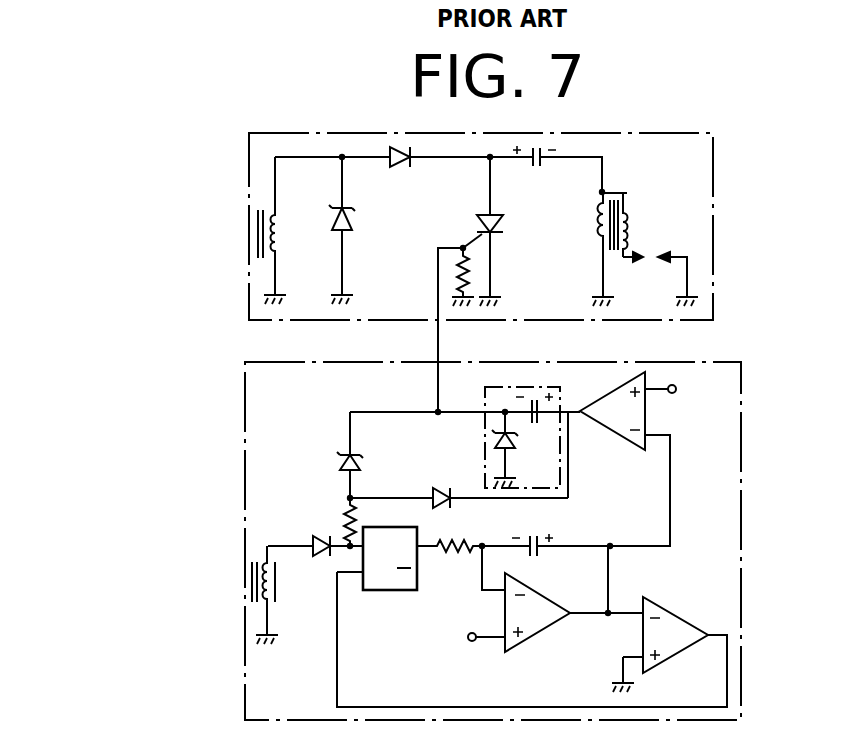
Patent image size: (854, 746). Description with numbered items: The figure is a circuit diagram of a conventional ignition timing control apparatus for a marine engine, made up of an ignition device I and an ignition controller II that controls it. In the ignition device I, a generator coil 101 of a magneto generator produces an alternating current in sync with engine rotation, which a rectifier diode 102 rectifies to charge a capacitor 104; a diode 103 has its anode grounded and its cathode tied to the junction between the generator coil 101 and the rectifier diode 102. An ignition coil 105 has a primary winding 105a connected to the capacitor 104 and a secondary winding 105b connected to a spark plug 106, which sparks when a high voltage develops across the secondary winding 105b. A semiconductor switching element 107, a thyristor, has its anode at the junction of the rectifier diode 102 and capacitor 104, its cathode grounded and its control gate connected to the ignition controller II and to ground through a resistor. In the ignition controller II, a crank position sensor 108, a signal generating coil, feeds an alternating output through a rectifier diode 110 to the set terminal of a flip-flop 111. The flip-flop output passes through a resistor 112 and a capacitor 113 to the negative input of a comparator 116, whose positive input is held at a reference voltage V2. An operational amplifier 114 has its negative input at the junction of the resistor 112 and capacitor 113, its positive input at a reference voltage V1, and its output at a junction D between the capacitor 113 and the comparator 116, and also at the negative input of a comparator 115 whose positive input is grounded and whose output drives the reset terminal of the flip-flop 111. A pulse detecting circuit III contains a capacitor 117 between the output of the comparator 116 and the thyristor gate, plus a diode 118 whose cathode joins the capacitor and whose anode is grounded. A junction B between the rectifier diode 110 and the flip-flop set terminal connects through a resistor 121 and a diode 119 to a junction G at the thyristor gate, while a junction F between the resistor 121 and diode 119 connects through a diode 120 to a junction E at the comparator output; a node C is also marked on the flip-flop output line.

The generator coil 101 is at (256, 210).
The rectifier diode 102 is at (398, 168).
The diode 103 is at (353, 222).
The capacitor 104 is at (540, 170).
The ignition coil 105 is at (615, 224).
The primary winding 105a is at (596, 215).
The secondary winding 105b is at (632, 237).
The spark plug 106 is at (651, 262).
The semiconductor switching element 107 is at (500, 225).
The crank position sensor 108 is at (250, 578).
The rectifier diode 110 is at (314, 542).
The flip-flop 111 is at (385, 591).
The resistor 112 is at (466, 546).
The capacitor 113 is at (548, 535).
The operational amplifier 114 is at (545, 638).
The comparator 115 is at (682, 655).
The comparator 116 is at (600, 423).
The capacitor 117 is at (528, 447).
The diode 118 is at (529, 477).
The diode 119 is at (344, 462).
The diode 120 is at (441, 490).
The resistor 121 is at (356, 522).
The ignition device I is at (713, 182).
The ignition controller II is at (741, 530).
The pulse detecting circuit III is at (482, 404).
The junction B is at (350, 544).
The node C is at (432, 545).
The junction D is at (614, 544).
The junction E is at (574, 404).
The junction F is at (352, 497).
The junction G is at (437, 414).
The reference voltage V1 is at (447, 641).
The reference voltage V2 is at (696, 391).